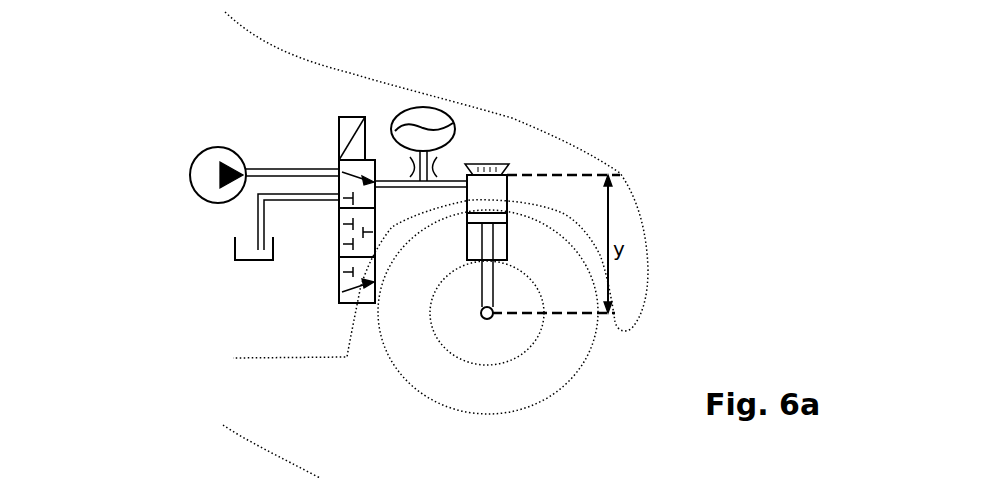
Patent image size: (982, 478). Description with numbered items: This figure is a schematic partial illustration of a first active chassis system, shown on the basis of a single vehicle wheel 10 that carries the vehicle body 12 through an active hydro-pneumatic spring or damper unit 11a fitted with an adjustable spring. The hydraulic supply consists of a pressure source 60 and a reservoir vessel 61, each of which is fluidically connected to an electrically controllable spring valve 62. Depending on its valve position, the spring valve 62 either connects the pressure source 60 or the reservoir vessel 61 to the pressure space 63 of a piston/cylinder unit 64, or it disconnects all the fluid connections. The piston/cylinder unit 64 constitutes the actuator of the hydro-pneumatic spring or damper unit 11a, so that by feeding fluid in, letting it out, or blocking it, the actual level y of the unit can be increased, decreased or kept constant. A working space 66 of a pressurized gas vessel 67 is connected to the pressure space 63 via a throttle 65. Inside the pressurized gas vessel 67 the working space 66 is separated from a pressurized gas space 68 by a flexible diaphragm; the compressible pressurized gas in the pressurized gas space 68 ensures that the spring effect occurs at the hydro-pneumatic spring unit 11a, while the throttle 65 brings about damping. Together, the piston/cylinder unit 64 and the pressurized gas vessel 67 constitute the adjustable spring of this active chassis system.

The vehicle wheel 10 is at (512, 387).
The active hydro-pneumatic spring or damper unit 11a is at (665, 123).
The vehicle body 12 is at (627, 217).
The pressure source 60 is at (202, 165).
The reservoir vessel 61 is at (235, 250).
The spring valve 62 is at (339, 278).
The pressure space 63 is at (478, 196).
The piston/cylinder unit 64 is at (508, 223).
The throttle 65 is at (412, 184).
The working space 66 is at (440, 143).
The pressurized gas vessel 67 is at (452, 120).
The pressurized gas space 68 is at (413, 112).